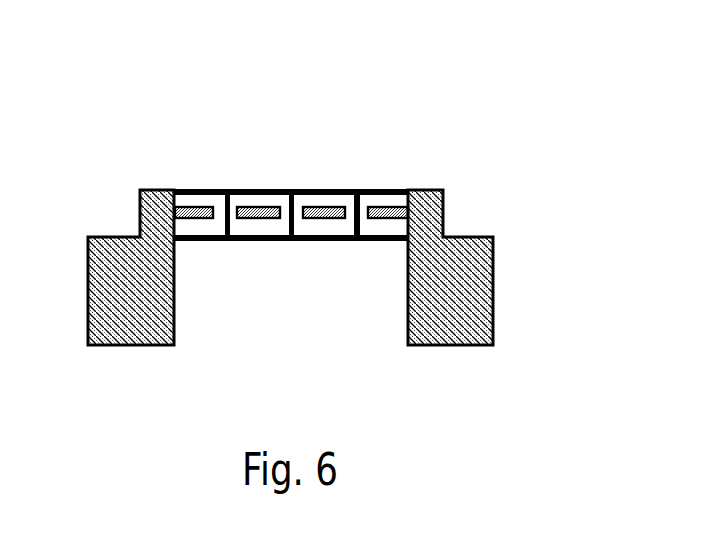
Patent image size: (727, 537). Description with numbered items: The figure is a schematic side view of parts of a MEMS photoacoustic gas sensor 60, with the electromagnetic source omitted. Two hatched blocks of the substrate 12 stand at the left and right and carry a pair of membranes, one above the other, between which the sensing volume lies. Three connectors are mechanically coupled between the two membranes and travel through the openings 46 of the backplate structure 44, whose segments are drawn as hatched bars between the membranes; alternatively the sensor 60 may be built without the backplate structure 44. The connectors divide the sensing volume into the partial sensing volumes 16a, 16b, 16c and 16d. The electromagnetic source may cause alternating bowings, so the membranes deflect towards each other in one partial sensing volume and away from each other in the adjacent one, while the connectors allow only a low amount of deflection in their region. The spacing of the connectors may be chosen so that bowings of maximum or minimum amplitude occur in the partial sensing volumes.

The MEMS photoacoustic gas sensor 60 is at (671, 30).
The substrate 12 is at (100, 323).
The partial sensing volume 16a is at (182, 198).
The partial sensing volume 16b is at (243, 198).
The partial sensing volume 16c is at (305, 199).
The partial sensing volume 16d is at (376, 229).
The backplate structure 44 is at (258, 220).
The opening 46 is at (363, 213).